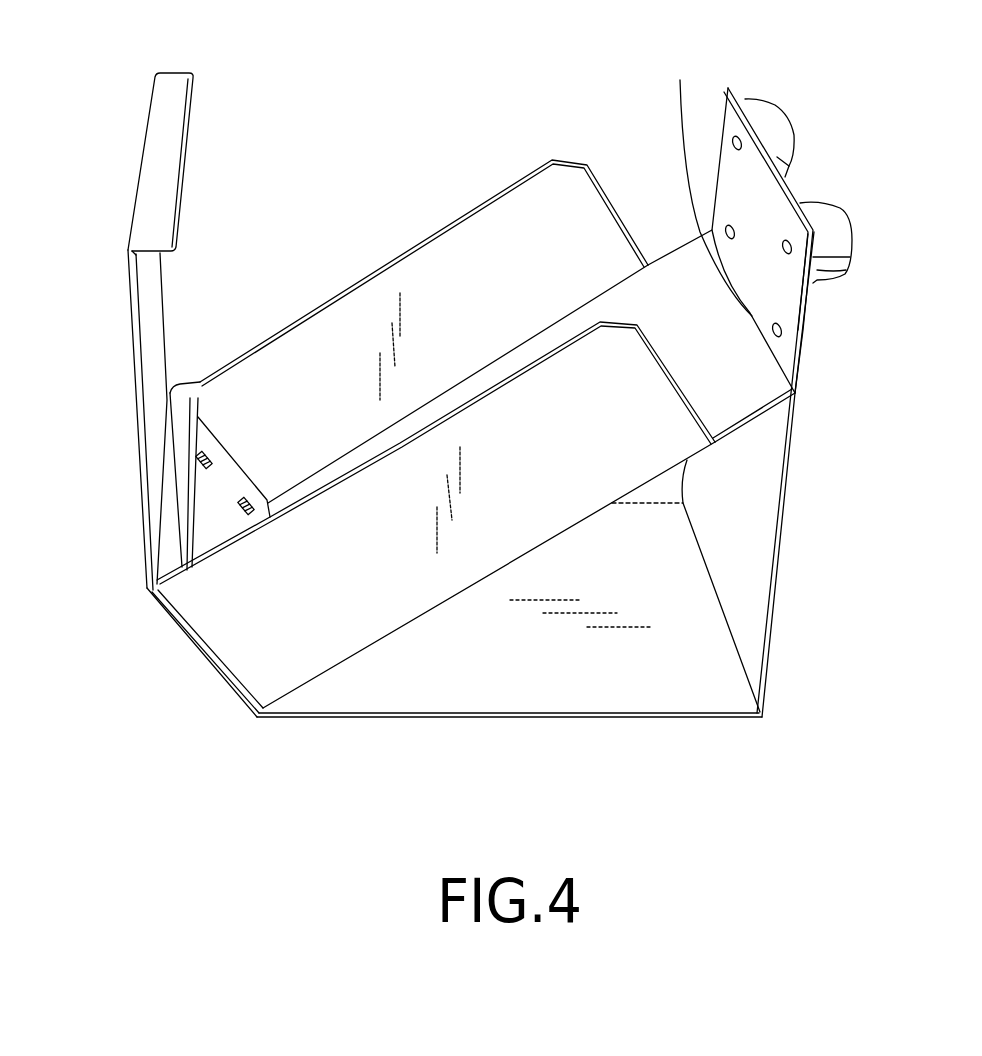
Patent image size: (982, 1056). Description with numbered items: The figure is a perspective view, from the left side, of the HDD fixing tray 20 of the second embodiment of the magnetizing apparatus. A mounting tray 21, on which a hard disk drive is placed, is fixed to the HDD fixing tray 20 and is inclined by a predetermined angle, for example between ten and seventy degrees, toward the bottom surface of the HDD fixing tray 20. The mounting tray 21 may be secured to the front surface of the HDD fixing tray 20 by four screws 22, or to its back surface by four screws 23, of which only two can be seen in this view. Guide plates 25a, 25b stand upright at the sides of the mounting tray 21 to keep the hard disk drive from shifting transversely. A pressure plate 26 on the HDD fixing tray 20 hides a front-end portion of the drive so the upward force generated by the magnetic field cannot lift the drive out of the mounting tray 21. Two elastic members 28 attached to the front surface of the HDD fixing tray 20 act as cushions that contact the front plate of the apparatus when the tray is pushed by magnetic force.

The HDD fixing tray 20 is at (383, 127).
The mounting tray 21 is at (580, 208).
The screws 22 is at (784, 243).
The screws 23 is at (240, 512).
The guide plate 25a is at (541, 385).
The guide plate 25b is at (462, 230).
The pressure plate 26 is at (183, 377).
The elastic members 28 is at (823, 207).